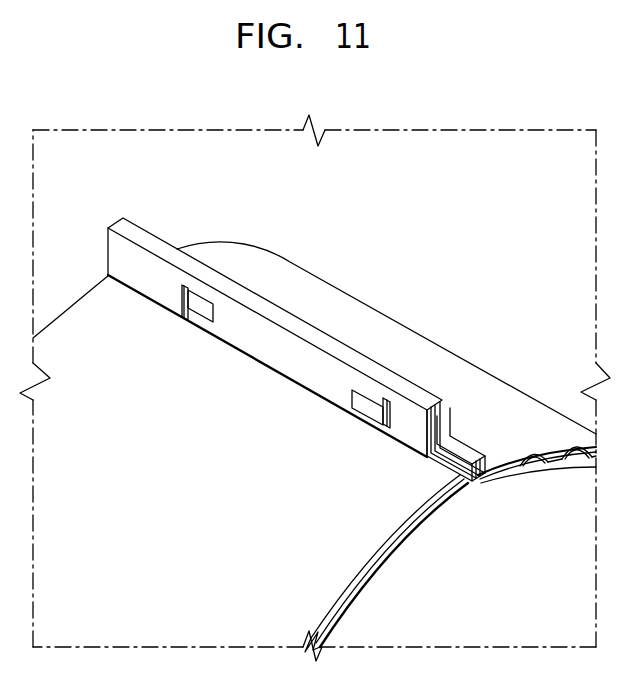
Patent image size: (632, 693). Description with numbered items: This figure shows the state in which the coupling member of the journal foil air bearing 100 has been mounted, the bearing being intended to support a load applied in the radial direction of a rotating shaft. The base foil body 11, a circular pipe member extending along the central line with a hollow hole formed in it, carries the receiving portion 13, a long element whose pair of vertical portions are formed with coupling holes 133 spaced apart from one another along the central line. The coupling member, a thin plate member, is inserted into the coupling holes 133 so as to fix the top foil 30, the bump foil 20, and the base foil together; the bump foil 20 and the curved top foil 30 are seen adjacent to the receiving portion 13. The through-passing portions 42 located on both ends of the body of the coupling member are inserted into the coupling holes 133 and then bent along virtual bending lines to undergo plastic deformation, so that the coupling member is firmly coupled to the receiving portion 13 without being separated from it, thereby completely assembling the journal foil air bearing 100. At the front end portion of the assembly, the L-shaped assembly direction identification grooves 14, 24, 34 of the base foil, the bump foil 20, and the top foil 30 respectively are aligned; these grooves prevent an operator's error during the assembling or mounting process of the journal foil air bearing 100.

The journal foil air bearing 100 is at (470, 257).
The base foil body 11 is at (293, 282).
The receiving portion 13 is at (331, 343).
The assembly direction identification groove 14 is at (477, 391).
The assembly direction identification groove 24 is at (477, 391).
The assembly direction identification groove 34 is at (457, 442).
The through-passing portions 42 is at (207, 320).
The coupling holes 133 is at (181, 287).
The top foil 30 is at (374, 576).
The bump foil 20 is at (543, 464).